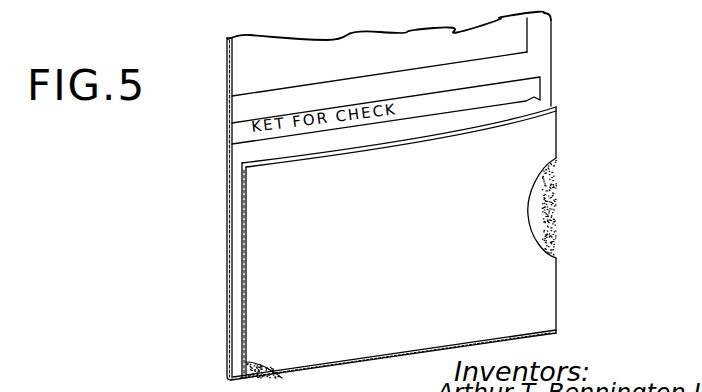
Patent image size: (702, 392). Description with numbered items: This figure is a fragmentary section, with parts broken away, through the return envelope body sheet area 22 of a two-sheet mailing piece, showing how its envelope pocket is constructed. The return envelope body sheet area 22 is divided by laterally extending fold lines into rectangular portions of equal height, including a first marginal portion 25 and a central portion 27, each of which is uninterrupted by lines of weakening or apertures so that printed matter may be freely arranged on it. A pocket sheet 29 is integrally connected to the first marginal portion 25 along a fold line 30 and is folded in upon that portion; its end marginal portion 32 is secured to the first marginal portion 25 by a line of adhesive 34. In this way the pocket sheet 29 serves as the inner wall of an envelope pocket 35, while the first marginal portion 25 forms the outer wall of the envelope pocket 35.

The return envelope body sheet area 22 is at (556, 67).
The central portion 27 is at (243, 48).
The first marginal portion 25 is at (235, 253).
The envelope pocket 35 is at (235, 176).
The pocket sheet 29 is at (404, 217).
The end marginal portion 32 is at (542, 141).
The fold line 30 is at (362, 366).
The line of adhesive 34 is at (557, 217).